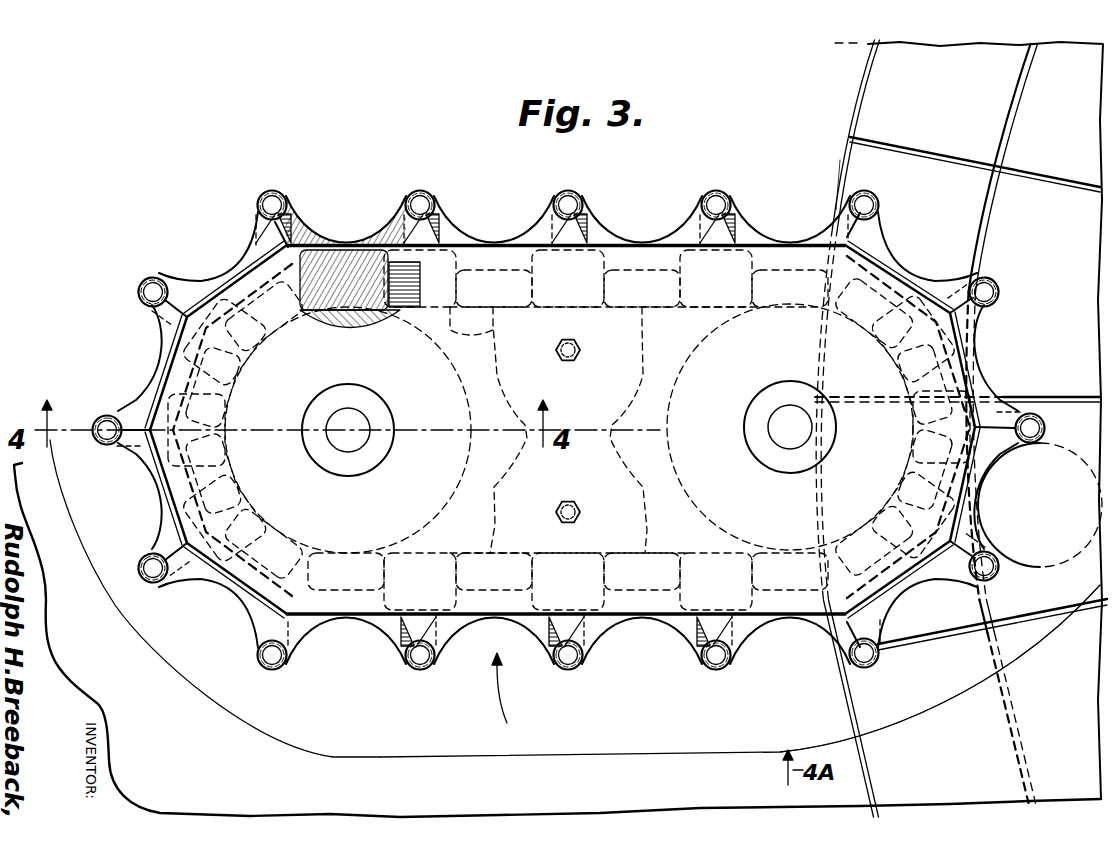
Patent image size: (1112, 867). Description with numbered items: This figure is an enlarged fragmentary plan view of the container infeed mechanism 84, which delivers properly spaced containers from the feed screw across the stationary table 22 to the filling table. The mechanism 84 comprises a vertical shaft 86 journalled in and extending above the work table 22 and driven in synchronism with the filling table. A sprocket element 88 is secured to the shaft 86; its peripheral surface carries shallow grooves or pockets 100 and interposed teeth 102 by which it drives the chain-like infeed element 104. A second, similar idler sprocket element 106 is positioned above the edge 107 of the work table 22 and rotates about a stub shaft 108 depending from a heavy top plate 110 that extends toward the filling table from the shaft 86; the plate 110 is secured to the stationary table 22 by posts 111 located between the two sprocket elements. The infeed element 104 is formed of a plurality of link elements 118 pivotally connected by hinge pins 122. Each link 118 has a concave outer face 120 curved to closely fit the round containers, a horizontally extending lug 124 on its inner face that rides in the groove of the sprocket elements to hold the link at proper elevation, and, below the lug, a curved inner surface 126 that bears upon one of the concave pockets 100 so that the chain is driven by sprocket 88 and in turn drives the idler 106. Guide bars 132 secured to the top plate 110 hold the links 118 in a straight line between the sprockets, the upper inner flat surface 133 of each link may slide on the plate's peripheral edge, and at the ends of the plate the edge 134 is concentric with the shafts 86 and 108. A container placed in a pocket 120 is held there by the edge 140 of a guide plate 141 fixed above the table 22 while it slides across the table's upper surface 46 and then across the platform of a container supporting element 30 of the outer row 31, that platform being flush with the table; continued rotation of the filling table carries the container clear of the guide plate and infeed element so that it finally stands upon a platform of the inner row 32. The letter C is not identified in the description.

The stationary table 22 is at (519, 699).
The container supporting element 30 is at (1003, 592).
The outer row 31 is at (865, 111).
The inner row 32 is at (1032, 118).
The upper surface 46 is at (807, 717).
The container infeed mechanism 84 is at (488, 240).
The vertical shaft 86 is at (372, 428).
The sprocket element 88 is at (605, 430).
The shallow grooves or pockets 100 is at (498, 373).
The teeth 102 is at (500, 328).
The chain-like infeed element 104 is at (187, 288).
The idler sprocket element 106 is at (662, 496).
The edge of work table 107 is at (845, 160).
The stub shaft 108 is at (782, 412).
The top plate 110 is at (480, 627).
The posts 111 is at (570, 364).
The link element 118 is at (155, 361).
The concave outer face 120 is at (312, 235).
The hinge pins 122 is at (274, 192).
The lug 124 is at (358, 300).
The curved inner surface 126 is at (320, 310).
The guide bars 132 is at (585, 318).
The upper inner flat surface 133 is at (332, 238).
The edge of top plate 134 is at (220, 578).
The edge of guide plate 140 is at (284, 756).
The guide plate 141 is at (393, 768).
The center of curvature C is at (1088, 455).